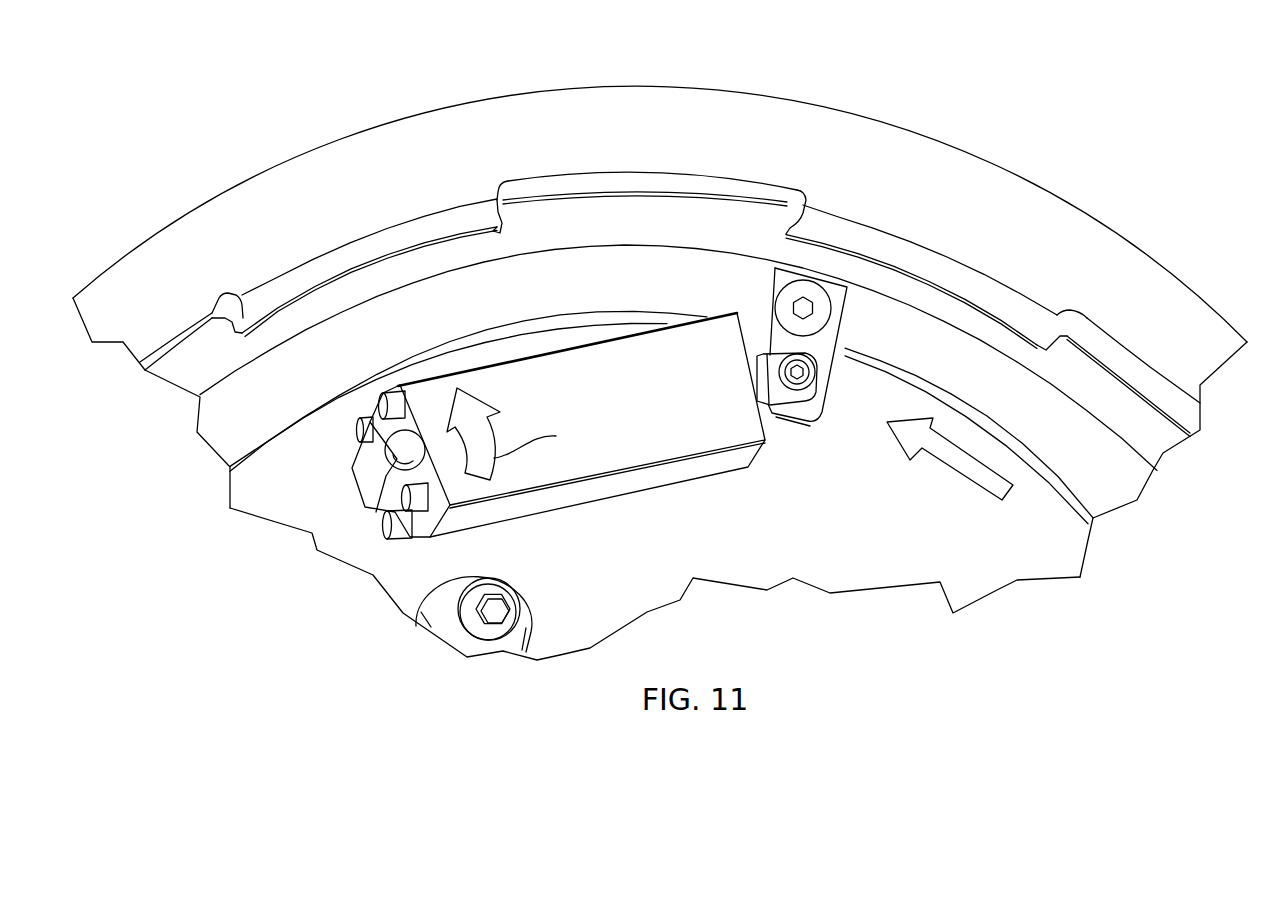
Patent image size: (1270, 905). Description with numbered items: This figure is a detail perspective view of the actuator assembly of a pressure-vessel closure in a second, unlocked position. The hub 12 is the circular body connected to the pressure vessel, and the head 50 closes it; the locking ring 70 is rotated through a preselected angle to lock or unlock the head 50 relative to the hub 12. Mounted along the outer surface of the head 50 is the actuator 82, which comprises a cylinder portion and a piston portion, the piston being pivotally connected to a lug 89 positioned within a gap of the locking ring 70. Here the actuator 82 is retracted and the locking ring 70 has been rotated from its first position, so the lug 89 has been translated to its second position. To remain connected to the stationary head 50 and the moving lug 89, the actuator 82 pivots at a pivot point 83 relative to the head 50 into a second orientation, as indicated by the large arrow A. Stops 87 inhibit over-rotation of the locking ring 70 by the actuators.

The hub 12 is at (975, 137).
The locking ring 70 is at (394, 324).
The head 50 is at (853, 568).
The first actuator 82 is at (740, 520).
The pivot point 83 is at (395, 492).
The stops 87 is at (753, 343).
The lug 89 is at (810, 412).